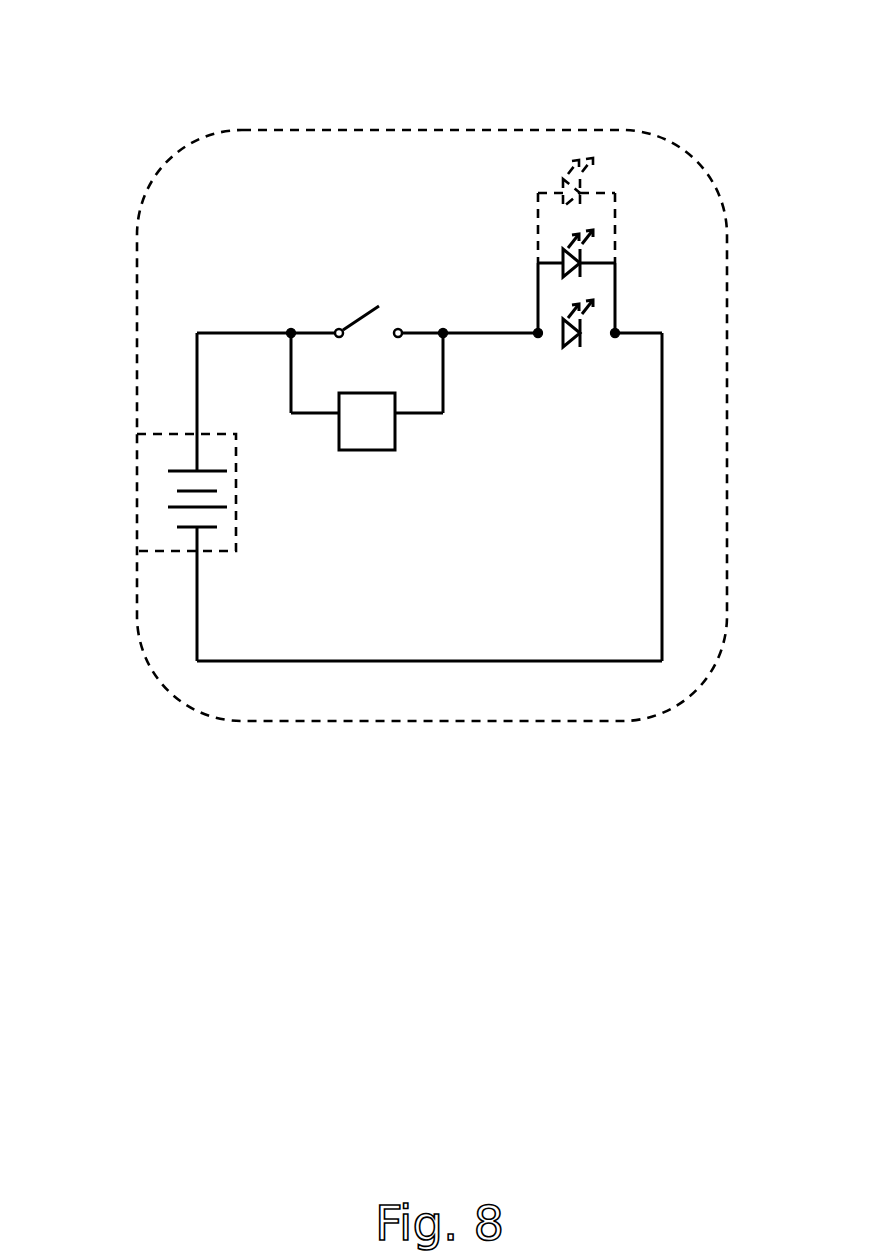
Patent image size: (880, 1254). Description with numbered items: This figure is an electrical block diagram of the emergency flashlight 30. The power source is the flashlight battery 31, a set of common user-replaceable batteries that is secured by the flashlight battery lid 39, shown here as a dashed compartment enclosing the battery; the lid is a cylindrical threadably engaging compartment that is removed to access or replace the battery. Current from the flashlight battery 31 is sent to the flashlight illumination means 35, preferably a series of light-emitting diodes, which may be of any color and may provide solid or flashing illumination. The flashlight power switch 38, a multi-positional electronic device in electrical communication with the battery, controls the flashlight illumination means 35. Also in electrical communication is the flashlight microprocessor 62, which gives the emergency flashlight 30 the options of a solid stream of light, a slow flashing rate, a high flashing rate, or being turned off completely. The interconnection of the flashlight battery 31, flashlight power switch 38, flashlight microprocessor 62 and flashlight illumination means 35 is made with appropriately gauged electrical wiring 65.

The emergency flashlight 30 is at (338, 130).
The flashlight battery 31 is at (177, 508).
The flashlight illumination means 35 is at (580, 333).
The flashlight power switch 38 is at (361, 317).
The flashlight battery lid 39 is at (163, 433).
The flashlight microprocessor 62 is at (363, 430).
The electrical wiring 65 is at (662, 598).